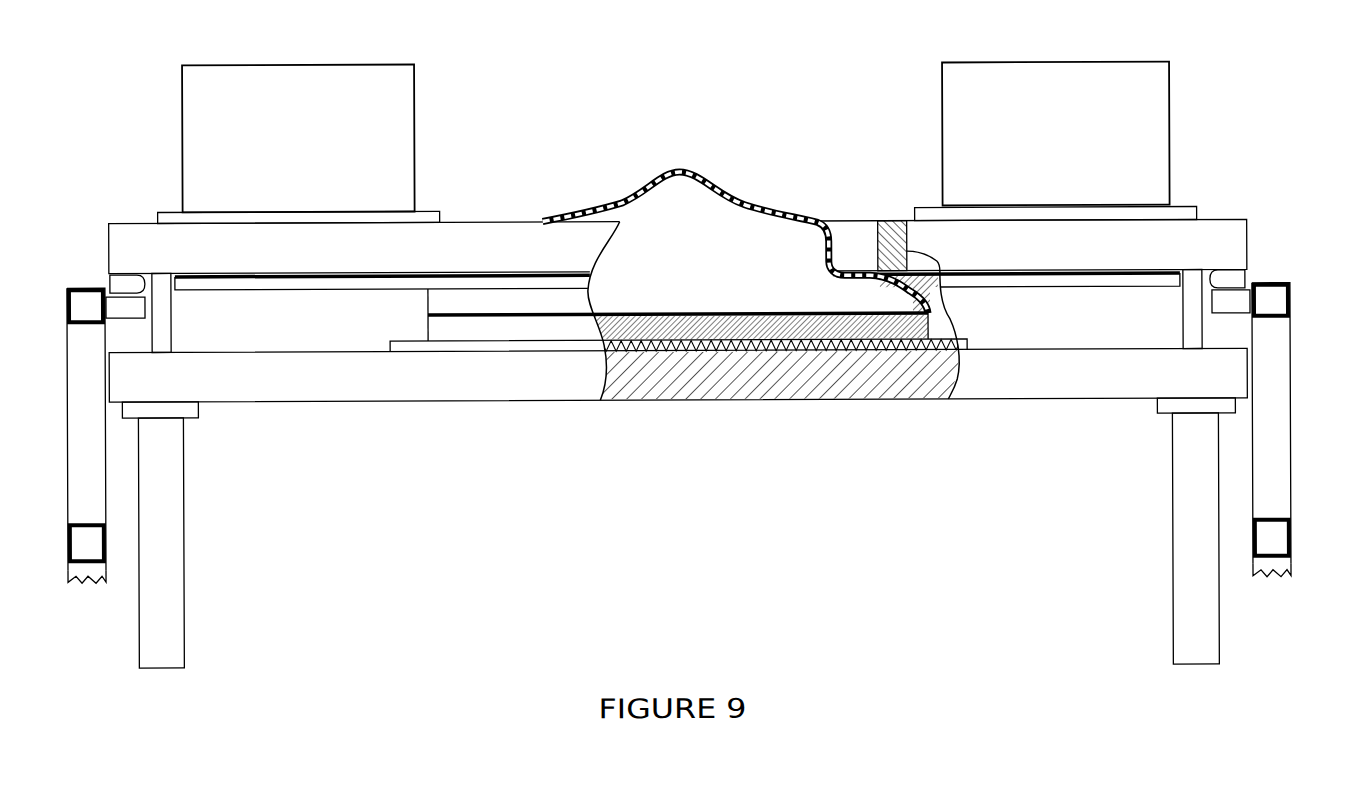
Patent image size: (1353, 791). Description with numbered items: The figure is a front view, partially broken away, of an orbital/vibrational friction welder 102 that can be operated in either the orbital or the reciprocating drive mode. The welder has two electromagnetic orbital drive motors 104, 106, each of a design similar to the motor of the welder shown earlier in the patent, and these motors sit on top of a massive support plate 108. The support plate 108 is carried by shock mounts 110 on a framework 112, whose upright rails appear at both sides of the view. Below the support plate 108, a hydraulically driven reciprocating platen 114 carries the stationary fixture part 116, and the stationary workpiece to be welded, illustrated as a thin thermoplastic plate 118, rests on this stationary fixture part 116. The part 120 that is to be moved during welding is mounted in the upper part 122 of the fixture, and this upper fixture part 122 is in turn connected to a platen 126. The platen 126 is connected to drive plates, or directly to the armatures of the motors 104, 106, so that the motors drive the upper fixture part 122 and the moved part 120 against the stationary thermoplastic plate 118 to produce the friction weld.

The friction welder 102 is at (455, 194).
The electromagnetic orbital drive motor 104 is at (417, 114).
The electromagnetic orbital drive motor 106 is at (1172, 113).
The support plate 108 is at (117, 238).
The shock mounts 110 is at (117, 287).
The framework 112 is at (72, 435).
The reciprocating platen 114 is at (485, 400).
The stationary fixture part 116 is at (427, 327).
The thin thermoplastic plate 118 is at (697, 317).
The part to be moved 120 is at (720, 196).
The upper part of the fixture 122 is at (427, 299).
The platen 126 is at (1085, 285).